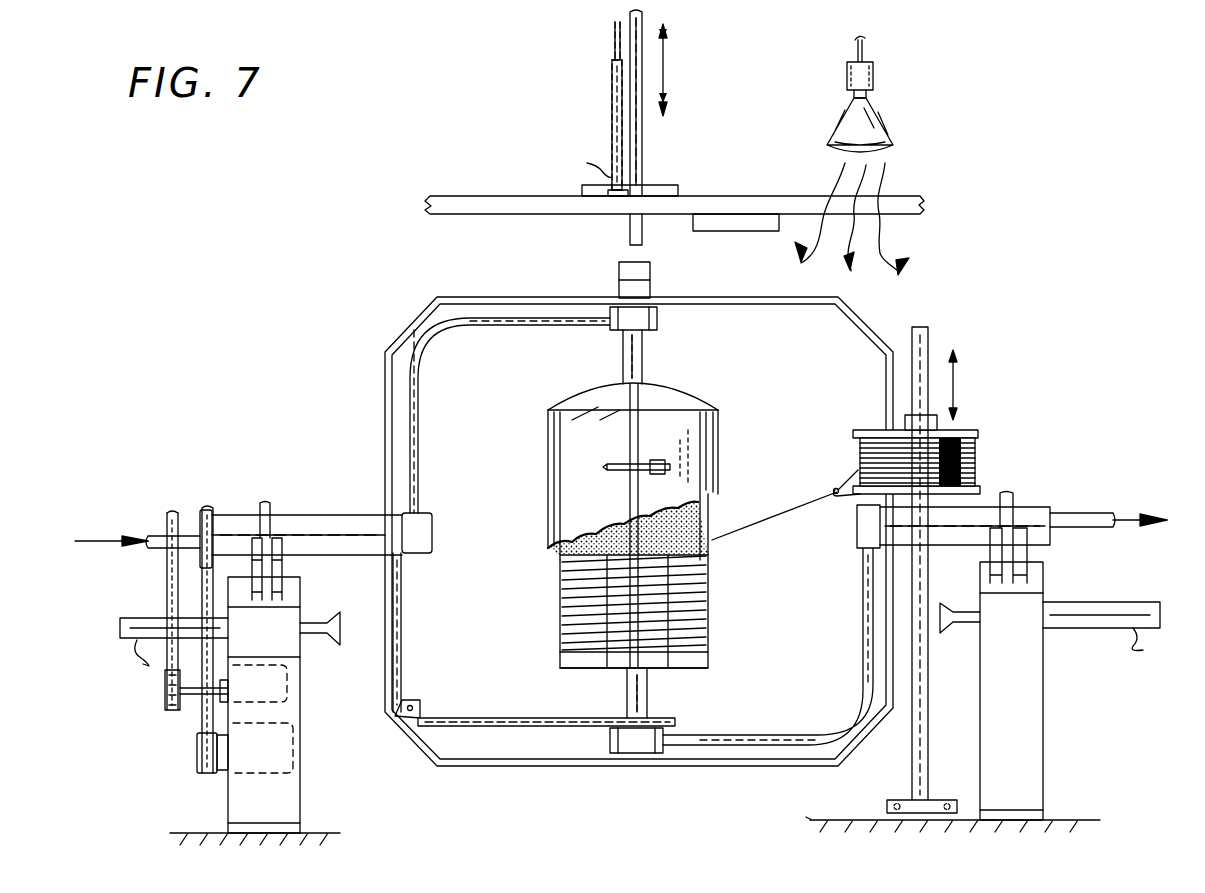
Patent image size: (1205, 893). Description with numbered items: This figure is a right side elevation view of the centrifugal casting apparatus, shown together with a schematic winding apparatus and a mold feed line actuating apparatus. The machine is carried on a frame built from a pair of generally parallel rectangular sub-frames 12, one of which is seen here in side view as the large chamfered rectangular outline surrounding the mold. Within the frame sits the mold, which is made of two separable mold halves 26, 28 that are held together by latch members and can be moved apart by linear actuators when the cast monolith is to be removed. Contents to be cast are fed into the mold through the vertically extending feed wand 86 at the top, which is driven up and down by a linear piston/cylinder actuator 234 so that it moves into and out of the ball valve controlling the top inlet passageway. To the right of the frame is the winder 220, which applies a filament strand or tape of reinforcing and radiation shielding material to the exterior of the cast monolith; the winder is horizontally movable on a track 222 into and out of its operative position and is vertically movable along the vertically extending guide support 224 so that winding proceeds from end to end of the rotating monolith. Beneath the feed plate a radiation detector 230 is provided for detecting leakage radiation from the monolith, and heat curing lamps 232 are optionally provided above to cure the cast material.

The rectangular sub-frame 12 is at (386, 333).
The mold half 26 is at (556, 434).
The mold half 28 is at (706, 440).
The feed wand 86 is at (643, 160).
The winder 220 is at (978, 456).
The track 222 is at (852, 815).
The guide support 224 is at (922, 698).
The radiation detector 230 is at (740, 232).
The heat curing lamp 232 is at (888, 119).
The linear piston/cylinder actuator 234 is at (615, 118).